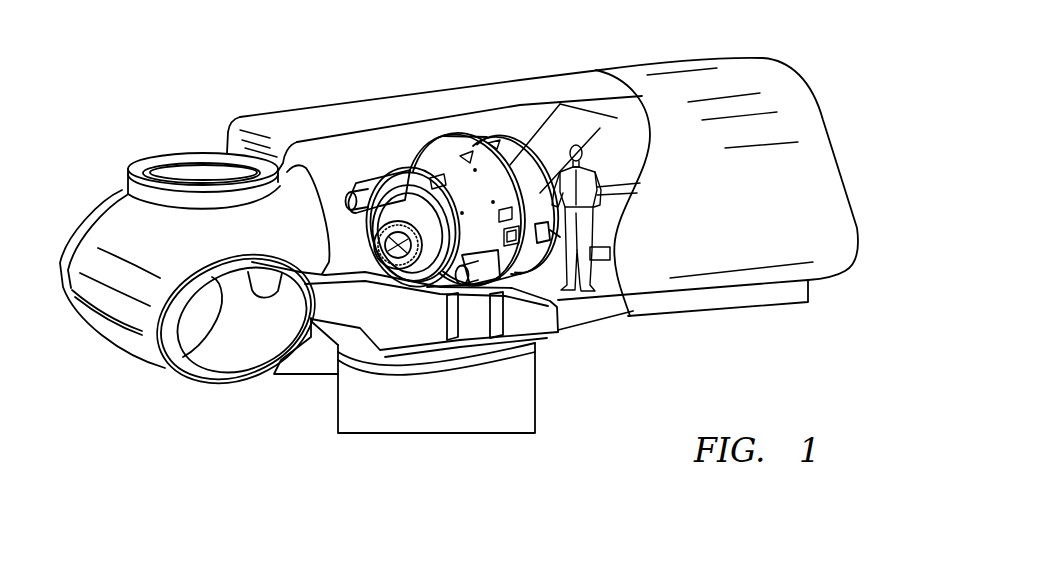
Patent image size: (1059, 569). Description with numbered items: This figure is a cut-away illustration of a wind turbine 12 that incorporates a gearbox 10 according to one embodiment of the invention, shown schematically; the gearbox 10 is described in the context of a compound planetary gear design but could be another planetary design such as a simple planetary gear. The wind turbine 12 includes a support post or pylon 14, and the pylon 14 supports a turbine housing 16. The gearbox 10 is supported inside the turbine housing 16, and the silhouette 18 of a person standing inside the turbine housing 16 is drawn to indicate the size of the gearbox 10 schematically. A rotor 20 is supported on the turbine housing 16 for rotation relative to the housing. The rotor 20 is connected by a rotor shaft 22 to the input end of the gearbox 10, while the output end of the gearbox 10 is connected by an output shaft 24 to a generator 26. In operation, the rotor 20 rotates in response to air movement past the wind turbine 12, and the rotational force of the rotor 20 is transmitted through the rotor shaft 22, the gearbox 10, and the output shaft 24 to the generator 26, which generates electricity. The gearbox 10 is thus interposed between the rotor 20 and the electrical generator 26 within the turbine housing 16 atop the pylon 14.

The gearbox 10 is at (422, 174).
The wind turbine 12 is at (305, 440).
The pylon 14 is at (518, 434).
The turbine housing 16 is at (722, 75).
The silhouette 18 is at (602, 318).
The rotor 20 is at (142, 367).
The rotor shaft 22 is at (337, 216).
The output shaft 24 is at (543, 215).
The generator 26 is at (588, 136).